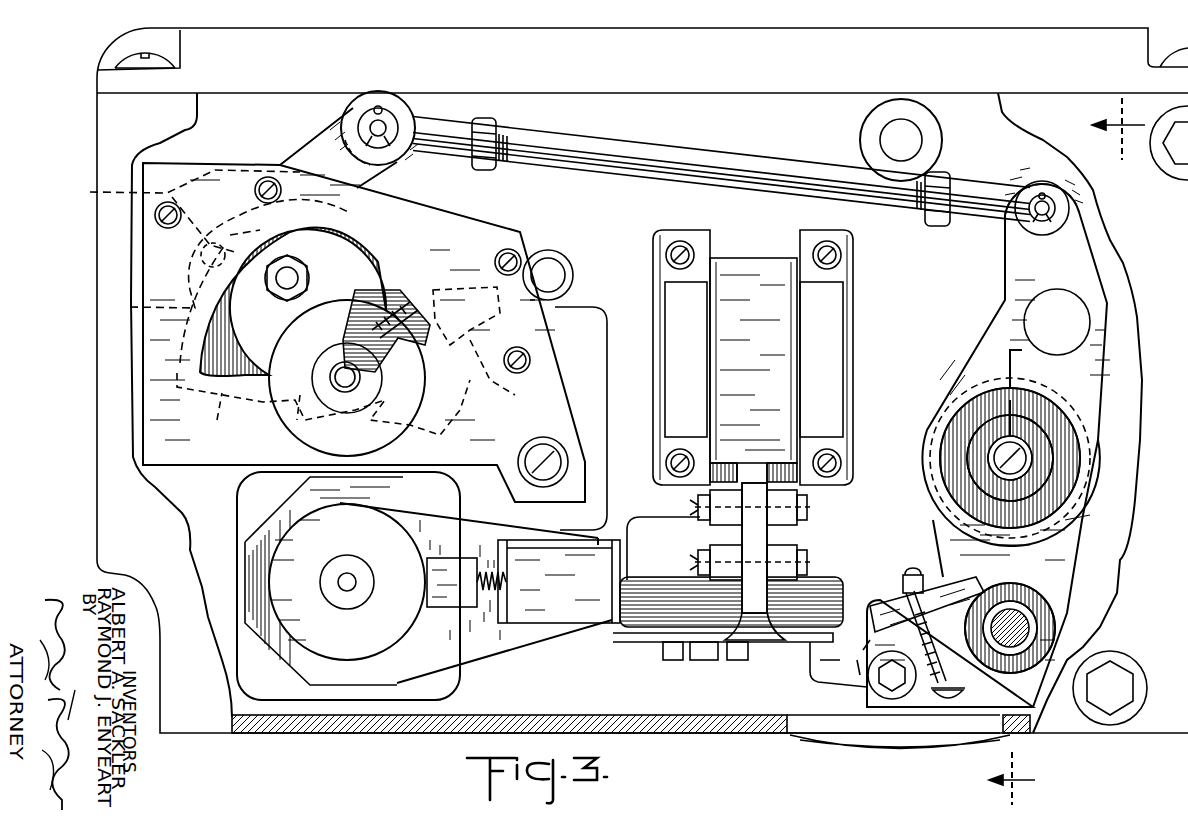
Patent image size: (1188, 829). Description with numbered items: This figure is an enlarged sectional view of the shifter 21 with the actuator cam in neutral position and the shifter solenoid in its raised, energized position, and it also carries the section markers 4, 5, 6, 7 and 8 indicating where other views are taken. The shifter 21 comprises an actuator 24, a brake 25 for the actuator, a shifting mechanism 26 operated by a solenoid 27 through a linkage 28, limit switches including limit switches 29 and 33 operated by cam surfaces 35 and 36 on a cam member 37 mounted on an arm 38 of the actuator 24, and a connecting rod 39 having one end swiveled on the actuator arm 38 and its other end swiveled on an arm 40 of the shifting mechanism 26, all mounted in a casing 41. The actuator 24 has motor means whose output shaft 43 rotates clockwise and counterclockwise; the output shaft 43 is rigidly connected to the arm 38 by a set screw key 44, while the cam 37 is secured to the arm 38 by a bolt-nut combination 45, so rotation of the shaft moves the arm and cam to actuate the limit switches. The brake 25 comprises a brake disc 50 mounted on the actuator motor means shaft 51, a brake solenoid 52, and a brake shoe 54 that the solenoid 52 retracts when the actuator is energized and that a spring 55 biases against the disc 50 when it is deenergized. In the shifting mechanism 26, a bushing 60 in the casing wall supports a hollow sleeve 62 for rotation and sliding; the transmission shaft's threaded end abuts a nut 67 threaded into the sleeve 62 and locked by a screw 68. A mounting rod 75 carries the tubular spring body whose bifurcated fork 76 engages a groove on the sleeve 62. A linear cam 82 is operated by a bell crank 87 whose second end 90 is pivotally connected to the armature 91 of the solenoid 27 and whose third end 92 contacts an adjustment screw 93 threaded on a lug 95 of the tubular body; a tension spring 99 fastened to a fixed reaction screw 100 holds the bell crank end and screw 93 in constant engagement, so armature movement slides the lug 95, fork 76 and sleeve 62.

The mounting plate 4 is at (123, 425).
The solenoid assembly section 5 is at (866, 377).
The bottom plate section 6 is at (893, 756).
The section line 7 is at (610, 660).
The section line 8 is at (1067, 453).
The shifter 21 is at (100, 62).
The actuator 24 is at (208, 553).
The brake 25 is at (450, 618).
The shifting mechanism 26 is at (1077, 587).
The solenoid 27 is at (810, 343).
The linkage 28 is at (853, 596).
The limit switch 29 is at (178, 218).
The limit switch 33 is at (542, 255).
The cam surface 35 is at (224, 281).
The cam surface 36 is at (540, 403).
The cam member 37 is at (323, 409).
The arm 38 is at (322, 154).
The connecting rod 39 is at (705, 173).
The arm 40 is at (1030, 250).
The casing 41 is at (672, 735).
The output shaft 43 is at (372, 386).
The set screw key 44 is at (397, 297).
The bolt-nut combination 45 is at (340, 245).
The brake disc 50 is at (337, 623).
The actuator motor means shaft 51 is at (344, 582).
The solenoid 52 is at (567, 590).
The brake shoe 54 is at (455, 596).
The spring 55 is at (490, 565).
The bushing 60 is at (1067, 402).
The hollow sleeve 62 is at (1043, 500).
The nut 67 is at (1043, 468).
The screw 68 is at (1030, 463).
The mounting rod 75 is at (1030, 625).
The bifurcated fork 76 is at (1063, 560).
The linear cam 82 is at (705, 655).
The bell crank 87 is at (753, 612).
The second end 90 is at (800, 560).
The armature 91 is at (752, 535).
The third end 92 is at (840, 665).
The adjustment screw 93 is at (877, 690).
The lug 95 is at (877, 642).
The tension spring 99 is at (924, 642).
The fixed reaction screw 100 is at (960, 685).